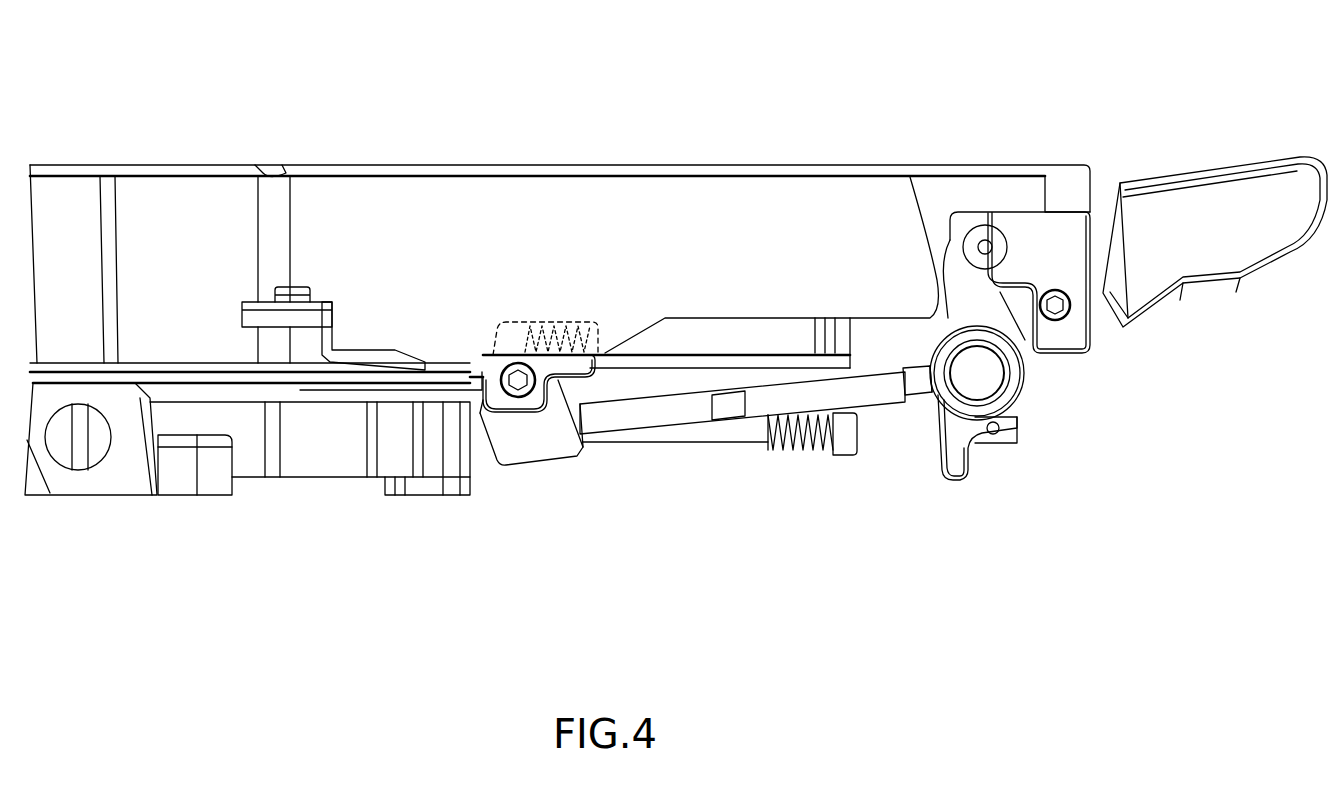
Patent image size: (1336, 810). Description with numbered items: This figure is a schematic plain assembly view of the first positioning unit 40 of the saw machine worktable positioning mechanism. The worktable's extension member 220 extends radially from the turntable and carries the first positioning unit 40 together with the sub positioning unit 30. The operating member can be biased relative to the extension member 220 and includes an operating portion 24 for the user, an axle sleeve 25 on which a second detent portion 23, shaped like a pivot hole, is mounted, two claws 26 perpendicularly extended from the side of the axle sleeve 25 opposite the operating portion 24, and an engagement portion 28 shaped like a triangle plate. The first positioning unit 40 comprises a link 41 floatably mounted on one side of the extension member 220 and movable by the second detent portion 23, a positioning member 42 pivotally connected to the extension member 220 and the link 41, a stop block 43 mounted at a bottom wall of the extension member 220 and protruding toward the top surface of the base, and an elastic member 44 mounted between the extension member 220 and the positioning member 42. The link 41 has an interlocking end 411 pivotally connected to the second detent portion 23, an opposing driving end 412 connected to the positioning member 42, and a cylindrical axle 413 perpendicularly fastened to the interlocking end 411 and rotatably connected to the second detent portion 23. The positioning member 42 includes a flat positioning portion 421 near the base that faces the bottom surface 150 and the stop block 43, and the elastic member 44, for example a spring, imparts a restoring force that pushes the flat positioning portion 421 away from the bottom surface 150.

The extension member 220 is at (772, 205).
The stop block 43 is at (470, 385).
The elastic member 44 is at (560, 335).
The engagement portion 28 is at (940, 268).
The operating portion 24 is at (1300, 190).
The bottom surface 150 is at (470, 400).
The flat positioning portion 421 is at (482, 430).
The positioning member 42 is at (525, 452).
The driving end 412 is at (596, 417).
The first positioning unit 40 is at (815, 455).
The link 41 is at (690, 420).
The sub positioning unit 30 is at (778, 455).
The interlocking end 411 is at (913, 385).
The second detent portion 23 is at (930, 392).
The claws 26 is at (952, 468).
The cylindrical axle 413 is at (1018, 392).
The axle sleeve 25 is at (980, 378).